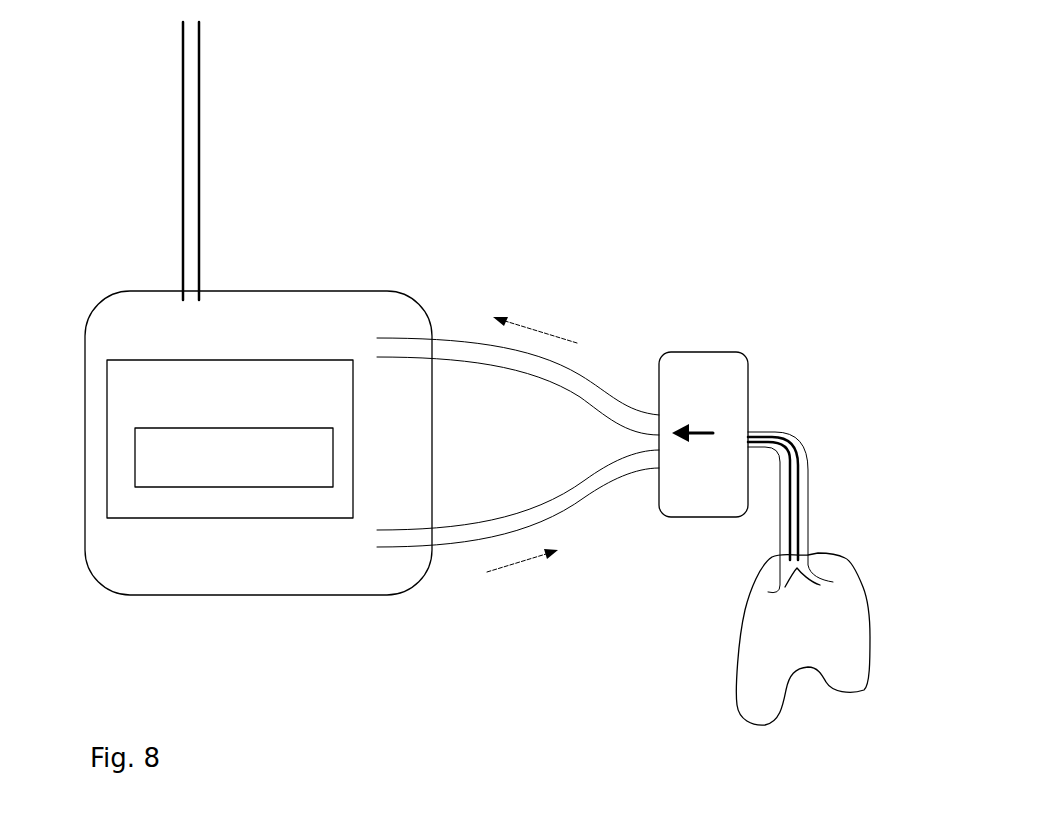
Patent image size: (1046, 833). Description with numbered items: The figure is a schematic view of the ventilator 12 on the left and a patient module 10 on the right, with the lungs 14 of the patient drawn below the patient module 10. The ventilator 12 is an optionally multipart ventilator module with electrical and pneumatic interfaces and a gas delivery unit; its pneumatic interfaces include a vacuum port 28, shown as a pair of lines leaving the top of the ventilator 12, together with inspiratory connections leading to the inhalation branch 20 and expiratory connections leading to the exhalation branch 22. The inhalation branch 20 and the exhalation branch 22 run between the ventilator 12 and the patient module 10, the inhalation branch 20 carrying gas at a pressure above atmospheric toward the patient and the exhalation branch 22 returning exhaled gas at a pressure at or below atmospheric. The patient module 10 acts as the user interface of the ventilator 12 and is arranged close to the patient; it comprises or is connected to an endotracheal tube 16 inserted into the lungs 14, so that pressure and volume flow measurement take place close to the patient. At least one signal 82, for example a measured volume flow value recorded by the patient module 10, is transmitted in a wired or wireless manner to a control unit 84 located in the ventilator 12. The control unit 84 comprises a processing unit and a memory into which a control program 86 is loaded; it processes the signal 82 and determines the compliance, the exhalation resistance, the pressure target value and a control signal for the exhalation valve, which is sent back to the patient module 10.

The patient module 10 is at (750, 370).
The ventilator 12 is at (258, 595).
The lungs 14 is at (867, 632).
The endotracheal tube 16 is at (803, 472).
The inhalation branch 20 is at (573, 515).
The exhalation branch 22 is at (588, 372).
The vacuum port 28 is at (200, 102).
The signal 82 is at (698, 362).
The control unit 84 is at (96, 379).
The control program 86 is at (140, 469).